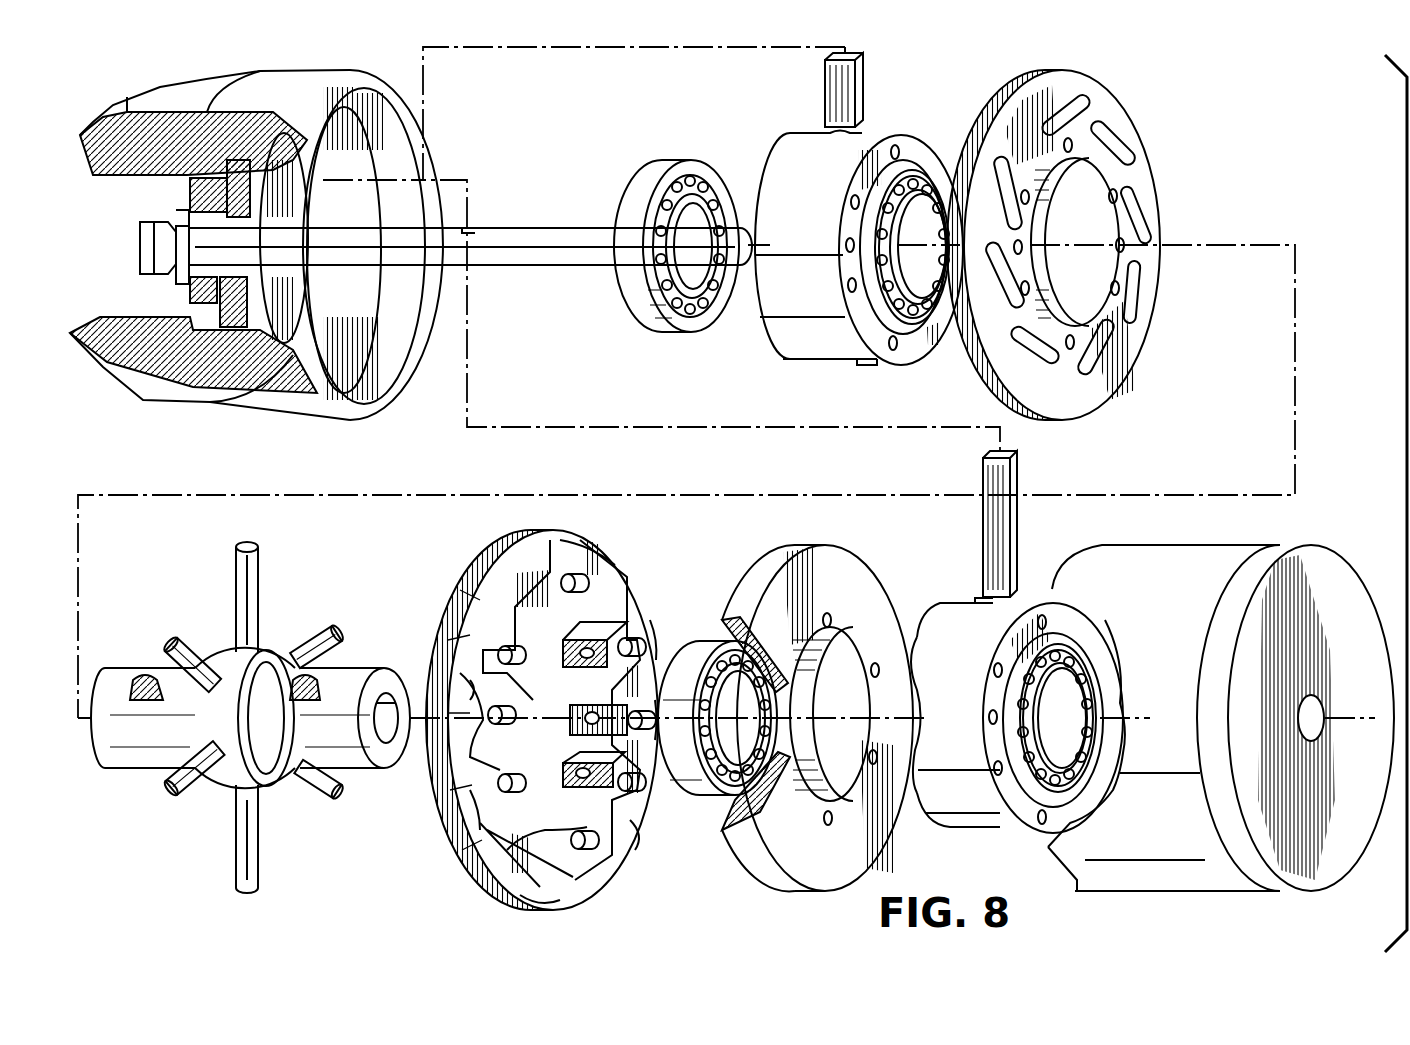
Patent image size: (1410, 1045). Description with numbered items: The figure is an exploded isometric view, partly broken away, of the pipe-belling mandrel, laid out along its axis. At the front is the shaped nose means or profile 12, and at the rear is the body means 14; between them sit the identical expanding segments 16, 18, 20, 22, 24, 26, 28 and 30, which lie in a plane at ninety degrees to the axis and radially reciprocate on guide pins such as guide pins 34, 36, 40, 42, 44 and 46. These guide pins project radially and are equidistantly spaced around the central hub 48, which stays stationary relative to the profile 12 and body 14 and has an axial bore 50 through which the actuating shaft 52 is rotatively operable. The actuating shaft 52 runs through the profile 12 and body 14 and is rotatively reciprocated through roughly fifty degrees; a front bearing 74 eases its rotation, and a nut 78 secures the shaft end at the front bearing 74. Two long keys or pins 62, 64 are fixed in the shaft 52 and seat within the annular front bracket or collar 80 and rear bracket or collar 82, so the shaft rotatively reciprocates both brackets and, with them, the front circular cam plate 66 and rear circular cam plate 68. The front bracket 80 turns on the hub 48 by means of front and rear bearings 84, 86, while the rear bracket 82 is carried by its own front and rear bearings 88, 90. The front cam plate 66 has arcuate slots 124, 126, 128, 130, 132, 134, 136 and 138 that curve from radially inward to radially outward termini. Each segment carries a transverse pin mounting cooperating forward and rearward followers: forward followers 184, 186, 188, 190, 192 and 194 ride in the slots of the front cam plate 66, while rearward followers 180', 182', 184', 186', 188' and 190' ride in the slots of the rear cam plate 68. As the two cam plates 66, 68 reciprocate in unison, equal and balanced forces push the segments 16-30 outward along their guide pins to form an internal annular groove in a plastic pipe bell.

The shaped nose means or profile 12 is at (186, 95).
The body means 14 is at (1185, 556).
The expanding segment 16 is at (512, 580).
The expanding segment 18 is at (592, 560).
The expanding segment 20 is at (658, 640).
The expanding segment 22 is at (652, 722).
The expanding segment 24 is at (640, 838).
The expanding segment 26 is at (538, 905).
The expanding segment 28 is at (476, 808).
The expanding segment 30 is at (472, 690).
The guide pin 34 is at (255, 597).
The guide pin 36 is at (322, 636).
The guide pin 40 is at (322, 788).
The guide pin 42 is at (258, 838).
The guide pin 44 is at (180, 792).
The guide pin 46 is at (193, 652).
The central hub 48 is at (357, 668).
The axial bore 50 is at (390, 728).
The actuating shaft 52 is at (498, 265).
The long key or pin 62 is at (833, 102).
The long key or pin 64 is at (1002, 541).
The front circular cam plate 66 is at (1005, 104).
The rear circular cam plate 68 is at (763, 560).
The front bearing 74 is at (182, 278).
The nut 78 is at (142, 252).
The front bracket or collar 80 is at (777, 306).
The rear bracket or collar 82 is at (946, 620).
The front bearing 84 is at (628, 290).
The rear bearing 86 is at (914, 158).
The front bearing 88 is at (712, 648).
The rear bearing 90 is at (1027, 607).
The arcuate slot 124 is at (1050, 102).
The arcuate slot 126 is at (1124, 138).
The arcuate slot 128 is at (1145, 218).
The arcuate slot 130 is at (1148, 305).
The arcuate slot 132 is at (1115, 352).
The arcuate slot 134 is at (1020, 352).
The arcuate slot 136 is at (1000, 292).
The arcuate slot 138 is at (1000, 165).
The rearward follower 180' is at (529, 662).
The rearward follower 182' is at (617, 572).
The forward follower 184 is at (576, 640).
The rearward follower 184' is at (654, 638).
The forward follower 186 is at (580, 724).
The rearward follower 186' is at (597, 702).
The forward follower 188 is at (579, 769).
The rearward follower 188' is at (656, 795).
The forward follower 190 is at (547, 825).
The rearward follower 190' is at (619, 860).
The forward follower 192 is at (515, 784).
The forward follower 194 is at (501, 716).